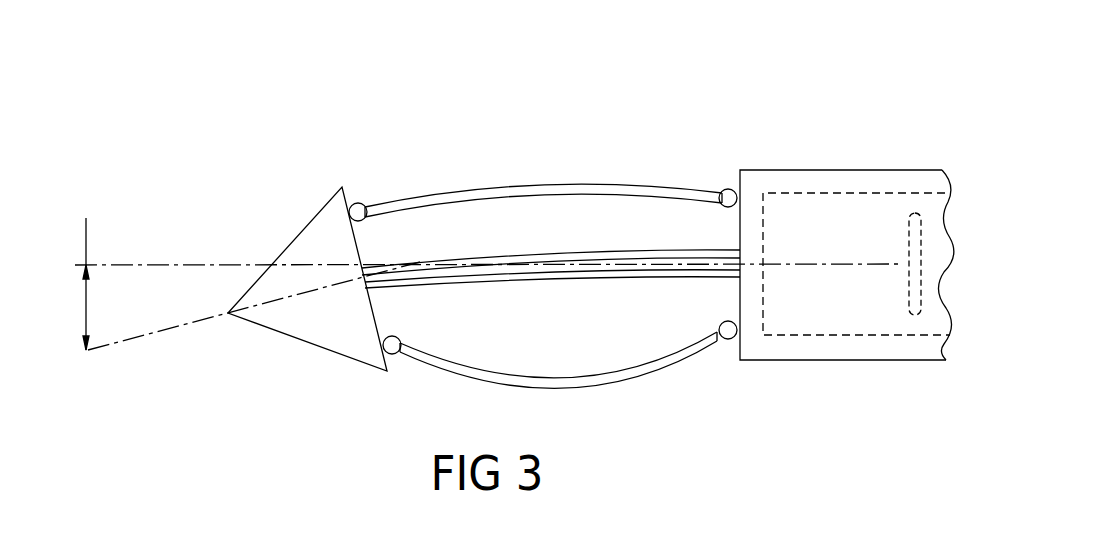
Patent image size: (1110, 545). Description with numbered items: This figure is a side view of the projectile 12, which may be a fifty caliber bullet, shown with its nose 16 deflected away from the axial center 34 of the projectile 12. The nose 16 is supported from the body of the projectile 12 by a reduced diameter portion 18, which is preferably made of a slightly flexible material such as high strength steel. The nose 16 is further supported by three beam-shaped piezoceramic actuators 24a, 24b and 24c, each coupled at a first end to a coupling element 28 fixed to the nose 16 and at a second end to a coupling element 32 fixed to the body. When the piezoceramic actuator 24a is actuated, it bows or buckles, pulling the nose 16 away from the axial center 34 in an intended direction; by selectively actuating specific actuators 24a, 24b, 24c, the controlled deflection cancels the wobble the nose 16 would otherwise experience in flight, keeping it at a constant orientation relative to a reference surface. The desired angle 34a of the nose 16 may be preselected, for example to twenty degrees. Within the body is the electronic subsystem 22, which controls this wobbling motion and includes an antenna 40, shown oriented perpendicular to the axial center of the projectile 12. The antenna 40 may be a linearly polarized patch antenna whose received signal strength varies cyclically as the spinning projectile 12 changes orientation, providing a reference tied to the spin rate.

The projectile 12 is at (810, 157).
The nose 16 is at (302, 250).
The reduced diameter portion 18 is at (473, 270).
The electronic subsystem 22 is at (798, 337).
The piezoceramic actuator 24a is at (458, 372).
The piezoceramic actuator 24b is at (387, 205).
The piezoceramic actuator 24c is at (430, 265).
The coupling element 28 is at (390, 354).
The coupling element 32 is at (728, 339).
The axial center 34 is at (205, 265).
The desired angle 34a is at (86, 218).
The antenna 40 is at (912, 212).